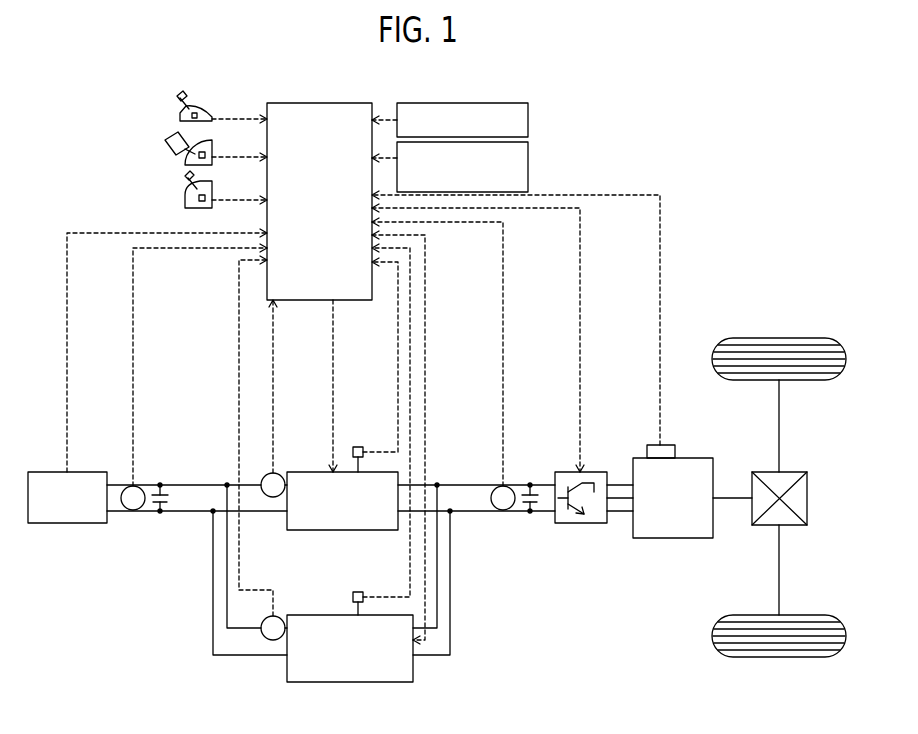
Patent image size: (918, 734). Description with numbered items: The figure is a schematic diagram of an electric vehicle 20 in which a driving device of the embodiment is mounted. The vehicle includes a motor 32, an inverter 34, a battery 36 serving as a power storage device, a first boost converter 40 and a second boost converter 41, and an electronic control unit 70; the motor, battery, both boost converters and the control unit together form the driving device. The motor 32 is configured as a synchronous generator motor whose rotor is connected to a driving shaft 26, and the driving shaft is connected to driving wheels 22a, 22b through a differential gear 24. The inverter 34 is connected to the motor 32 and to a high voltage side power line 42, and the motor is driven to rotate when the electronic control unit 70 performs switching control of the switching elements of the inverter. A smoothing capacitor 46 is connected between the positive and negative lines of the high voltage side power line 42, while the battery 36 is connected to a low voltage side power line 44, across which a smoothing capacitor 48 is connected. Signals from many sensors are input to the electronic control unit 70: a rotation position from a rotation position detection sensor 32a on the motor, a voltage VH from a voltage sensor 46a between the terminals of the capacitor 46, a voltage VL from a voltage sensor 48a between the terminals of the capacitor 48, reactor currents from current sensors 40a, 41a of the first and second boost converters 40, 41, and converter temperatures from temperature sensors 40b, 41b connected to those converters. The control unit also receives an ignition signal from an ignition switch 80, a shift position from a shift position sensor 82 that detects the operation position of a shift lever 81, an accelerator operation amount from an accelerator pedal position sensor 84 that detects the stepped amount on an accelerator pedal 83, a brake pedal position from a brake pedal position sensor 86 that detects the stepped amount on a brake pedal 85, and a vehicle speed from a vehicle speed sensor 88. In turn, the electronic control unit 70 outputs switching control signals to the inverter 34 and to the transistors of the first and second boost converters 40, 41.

The electric vehicle 20 is at (660, 100).
The driving wheel 22a is at (776, 336).
The driving wheel 22b is at (780, 659).
The differential gear 24 is at (790, 470).
The driving shaft 26 is at (727, 496).
The motor 32 is at (687, 457).
The rotation position detection sensor 32a is at (655, 443).
The inverter 34 is at (591, 470).
The battery 36 is at (56, 470).
The first boost converter 40 is at (313, 470).
The current sensor 40a is at (270, 500).
The temperature sensor 40b is at (359, 446).
The second boost converter 41 is at (311, 613).
The current sensor 41a is at (272, 641).
The temperature sensor 41b is at (359, 591).
The high voltage side power line 42 is at (548, 511).
The low voltage side power line 44 is at (186, 510).
The smoothing capacitor 46 is at (531, 512).
The voltage sensor 46a is at (503, 511).
The smoothing capacitor 48 is at (161, 513).
The voltage sensor 48a is at (136, 512).
The electronic control unit 70 is at (319, 101).
The ignition switch 80 is at (528, 119).
The shift lever 81 is at (176, 101).
The shift position sensor 82 is at (180, 120).
The accelerator pedal 83 is at (170, 141).
The accelerator pedal position sensor 84 is at (186, 158).
The brake pedal 85 is at (185, 188).
The brake pedal position sensor 86 is at (185, 203).
The vehicle speed sensor 88 is at (528, 158).